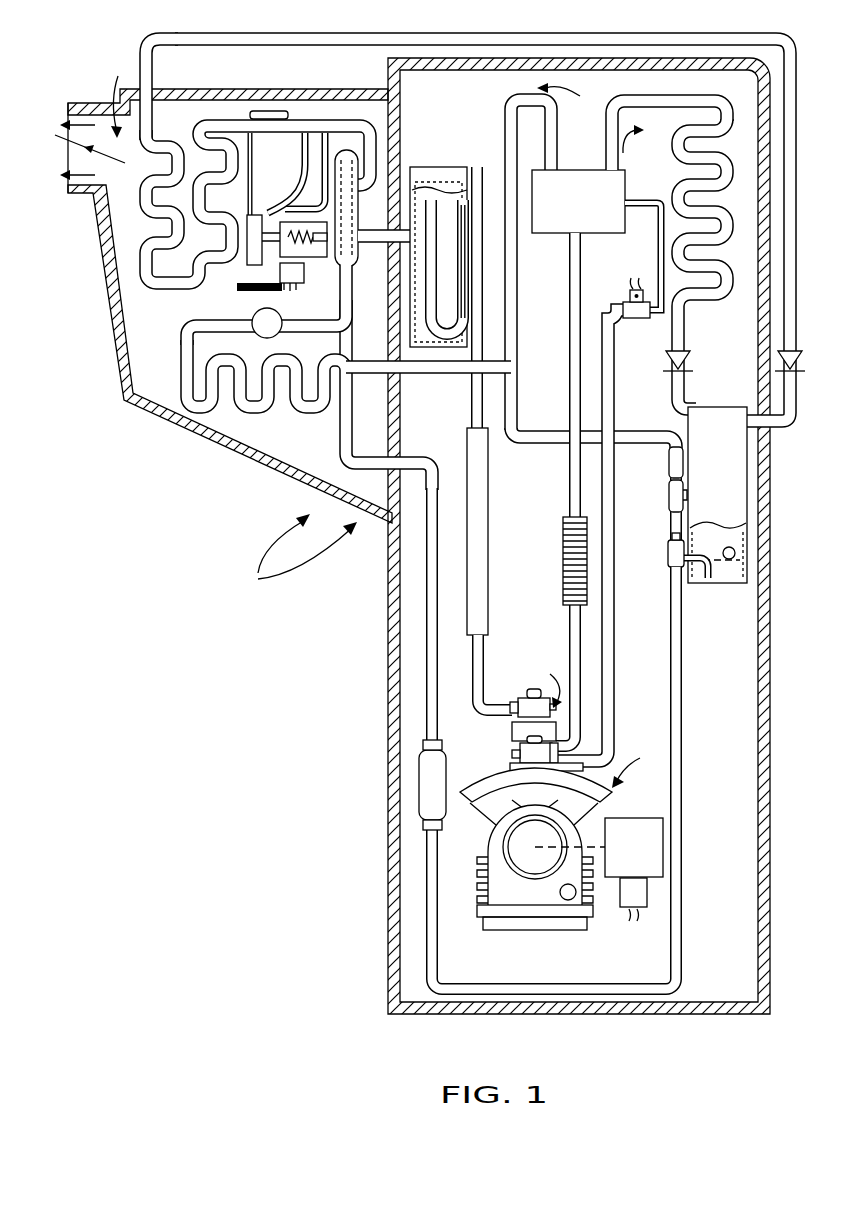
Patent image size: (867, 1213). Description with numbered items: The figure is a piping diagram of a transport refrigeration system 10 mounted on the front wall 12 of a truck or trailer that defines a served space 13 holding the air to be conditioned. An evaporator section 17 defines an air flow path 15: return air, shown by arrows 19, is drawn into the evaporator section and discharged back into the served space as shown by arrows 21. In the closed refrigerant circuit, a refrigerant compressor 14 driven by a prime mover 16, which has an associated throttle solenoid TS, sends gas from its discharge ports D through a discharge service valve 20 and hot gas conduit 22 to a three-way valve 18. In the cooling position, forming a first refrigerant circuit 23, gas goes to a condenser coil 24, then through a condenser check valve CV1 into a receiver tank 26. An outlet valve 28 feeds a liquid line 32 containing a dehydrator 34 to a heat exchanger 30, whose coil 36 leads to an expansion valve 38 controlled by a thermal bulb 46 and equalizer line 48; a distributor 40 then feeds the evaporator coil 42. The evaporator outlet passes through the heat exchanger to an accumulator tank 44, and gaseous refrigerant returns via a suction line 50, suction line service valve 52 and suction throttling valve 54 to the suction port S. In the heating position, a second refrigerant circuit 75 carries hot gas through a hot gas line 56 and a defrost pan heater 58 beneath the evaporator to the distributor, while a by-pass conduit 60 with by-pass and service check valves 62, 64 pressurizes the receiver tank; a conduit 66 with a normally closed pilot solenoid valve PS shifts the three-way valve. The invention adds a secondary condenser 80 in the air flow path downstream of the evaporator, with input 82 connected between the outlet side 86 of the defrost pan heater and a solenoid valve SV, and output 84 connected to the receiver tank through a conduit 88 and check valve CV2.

The transport refrigeration system 10 is at (355, 25).
The front wall 12 is at (398, 142).
The served space 13 is at (226, 710).
The refrigerant compressor 14 is at (477, 878).
The air flow path 15 is at (119, 95).
The prime mover 16 is at (625, 818).
The evaporator section 17 is at (198, 90).
The three-way valve 18 is at (572, 170).
The return air arrows 19 is at (297, 552).
The compressor suction valve 20 is at (520, 753).
The discharge air arrows 21 is at (88, 106).
The hot gas conduit 22 is at (570, 463).
The first refrigerant circuit 23 is at (669, 135).
The condenser coil 24 is at (733, 258).
The receiver tank 26 is at (706, 585).
The outlet valve 28 is at (667, 557).
The heat exchanger 30 is at (381, 298).
The liquid line 32 is at (681, 915).
The dehydrator 34 is at (420, 776).
The coil 36 is at (359, 211).
The expansion valve 38 is at (288, 222).
The distributor 40 is at (348, 302).
The evaporator coil 42 is at (208, 119).
The accumulator tank 44 is at (432, 168).
The expansion valve thermal bulb 46 is at (277, 111).
The equalizer line 48 is at (305, 168).
The suction line 50 is at (488, 508).
The suction line service valve 52 is at (532, 700).
The suction throttling valve 54 is at (512, 732).
The hot gas line 56 is at (506, 120).
The defrost pan heater 58 is at (252, 412).
The by-pass conduit 60 is at (560, 433).
The by-pass check valve 62 is at (669, 468).
The service check valve 64 is at (669, 497).
The conduit 66 is at (613, 400).
The second refrigerant circuit 75 is at (569, 90).
The secondary condenser 80 is at (98, 217).
The input of secondary condenser 82 is at (262, 285).
The output of secondary condenser 84 is at (142, 44).
The outlet side of defrost pan heater 86 is at (180, 327).
The conduit 88 is at (237, 36).
The solenoid valve SV is at (286, 285).
The pilot solenoid valve PS is at (640, 319).
The condenser check valve CV1 is at (669, 364).
The check valve CV2 is at (780, 364).
The suction port S is at (554, 680).
The discharge ports D is at (556, 773).
The throttle solenoid TS is at (633, 899).